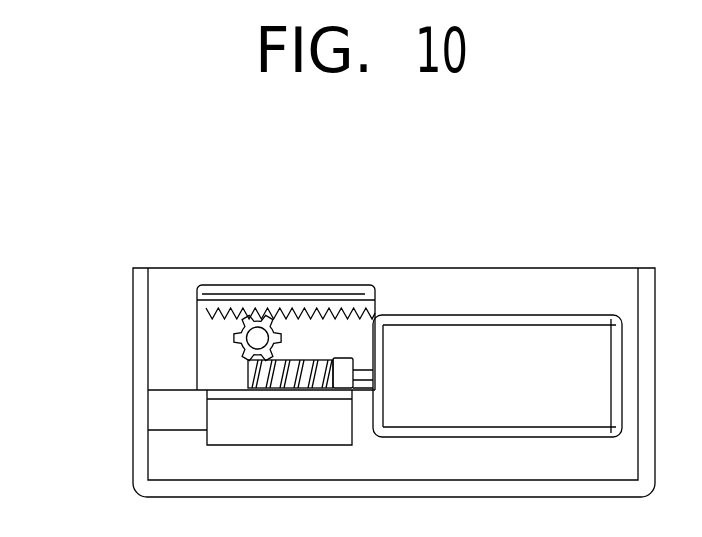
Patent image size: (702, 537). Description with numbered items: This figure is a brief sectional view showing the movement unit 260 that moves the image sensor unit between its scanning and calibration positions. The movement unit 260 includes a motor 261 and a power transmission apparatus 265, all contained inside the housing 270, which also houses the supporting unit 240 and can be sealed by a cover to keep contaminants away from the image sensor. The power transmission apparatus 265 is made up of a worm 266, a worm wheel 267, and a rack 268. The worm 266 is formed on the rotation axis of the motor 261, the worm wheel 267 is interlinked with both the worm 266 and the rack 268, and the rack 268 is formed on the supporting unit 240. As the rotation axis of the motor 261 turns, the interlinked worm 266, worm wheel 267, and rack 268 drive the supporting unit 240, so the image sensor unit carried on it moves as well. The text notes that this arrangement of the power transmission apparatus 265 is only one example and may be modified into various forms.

The supporting unit 240 is at (220, 360).
The movement unit 260 is at (408, 185).
The motor 261 is at (428, 338).
The power transmission apparatus 265 is at (247, 228).
The worm 266 is at (318, 358).
The worm wheel 267 is at (288, 316).
The rack 268 is at (243, 312).
The housing 270 is at (138, 310).